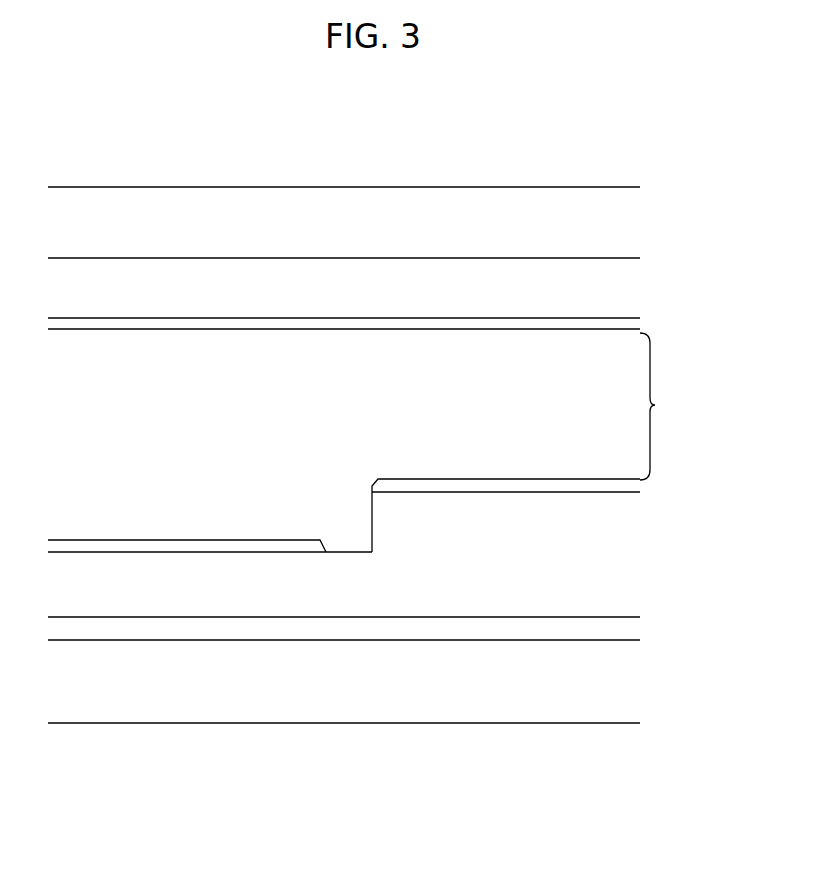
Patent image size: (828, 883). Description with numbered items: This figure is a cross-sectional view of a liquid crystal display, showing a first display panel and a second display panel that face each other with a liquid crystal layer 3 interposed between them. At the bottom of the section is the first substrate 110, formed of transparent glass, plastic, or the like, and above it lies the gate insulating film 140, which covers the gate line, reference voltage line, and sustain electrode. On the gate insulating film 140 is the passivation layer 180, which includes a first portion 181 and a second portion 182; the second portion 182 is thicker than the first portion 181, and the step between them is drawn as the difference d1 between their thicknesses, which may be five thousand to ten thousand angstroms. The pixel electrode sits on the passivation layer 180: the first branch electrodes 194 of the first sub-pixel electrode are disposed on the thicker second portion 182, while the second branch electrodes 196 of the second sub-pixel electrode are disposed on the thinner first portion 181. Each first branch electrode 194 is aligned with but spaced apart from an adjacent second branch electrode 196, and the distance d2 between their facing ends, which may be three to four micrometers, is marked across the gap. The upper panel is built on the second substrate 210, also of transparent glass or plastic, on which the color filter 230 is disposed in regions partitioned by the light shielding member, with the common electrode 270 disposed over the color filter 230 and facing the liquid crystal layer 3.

The second substrate 210 is at (628, 225).
The color filter 230 is at (628, 283).
The common electrode 270 is at (628, 327).
The liquid crystal layer 3 is at (654, 406).
The first branch electrodes 194 is at (553, 485).
The second branch electrodes 196 is at (110, 548).
The gate insulating film 140 is at (196, 627).
The first substrate 110 is at (477, 703).
The first portion 181 is at (268, 571).
The second portion 182 is at (452, 523).
The passivation layer 180 is at (393, 783).
The difference between the thicknesses d1 is at (372, 552).
The distance d2 is at (372, 556).